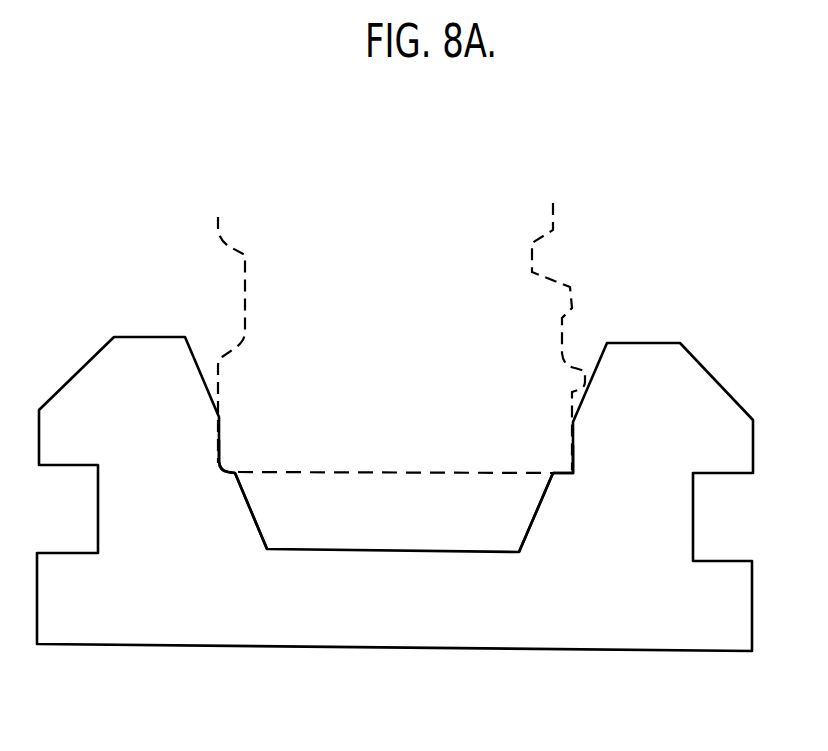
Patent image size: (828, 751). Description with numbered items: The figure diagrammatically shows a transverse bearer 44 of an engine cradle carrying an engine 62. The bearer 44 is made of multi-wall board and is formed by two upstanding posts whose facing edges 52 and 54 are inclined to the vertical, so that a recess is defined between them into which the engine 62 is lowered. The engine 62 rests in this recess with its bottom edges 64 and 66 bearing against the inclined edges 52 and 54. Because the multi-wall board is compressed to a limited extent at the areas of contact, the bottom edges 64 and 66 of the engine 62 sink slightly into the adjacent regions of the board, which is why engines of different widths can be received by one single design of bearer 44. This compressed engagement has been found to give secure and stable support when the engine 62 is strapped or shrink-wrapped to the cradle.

The transverse bearer 44 is at (252, 645).
The inclined edge 52 is at (255, 513).
The inclined edge 54 is at (533, 507).
The engine 62 is at (428, 413).
The bottom edge of the engine 64 is at (222, 466).
The bottom edge of the engine 66 is at (569, 472).